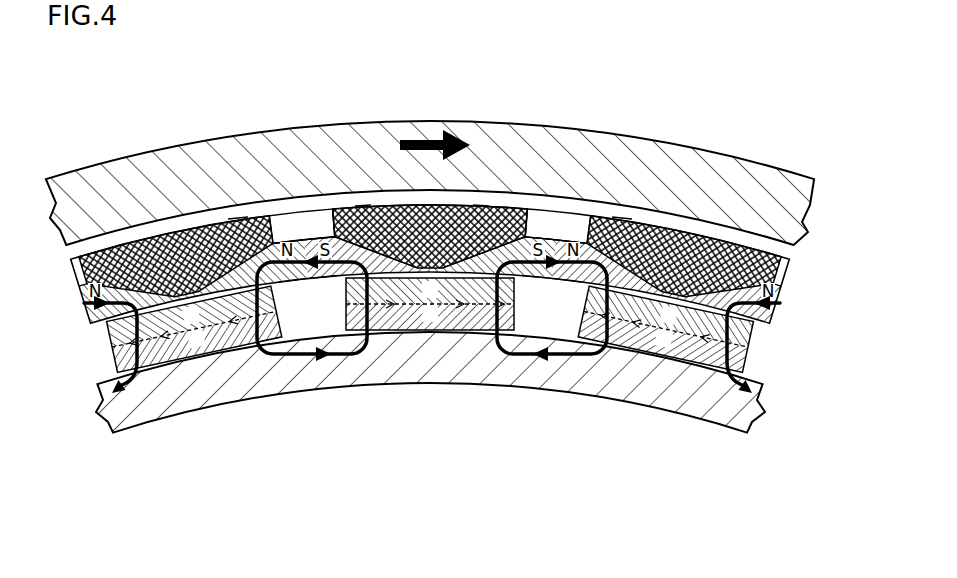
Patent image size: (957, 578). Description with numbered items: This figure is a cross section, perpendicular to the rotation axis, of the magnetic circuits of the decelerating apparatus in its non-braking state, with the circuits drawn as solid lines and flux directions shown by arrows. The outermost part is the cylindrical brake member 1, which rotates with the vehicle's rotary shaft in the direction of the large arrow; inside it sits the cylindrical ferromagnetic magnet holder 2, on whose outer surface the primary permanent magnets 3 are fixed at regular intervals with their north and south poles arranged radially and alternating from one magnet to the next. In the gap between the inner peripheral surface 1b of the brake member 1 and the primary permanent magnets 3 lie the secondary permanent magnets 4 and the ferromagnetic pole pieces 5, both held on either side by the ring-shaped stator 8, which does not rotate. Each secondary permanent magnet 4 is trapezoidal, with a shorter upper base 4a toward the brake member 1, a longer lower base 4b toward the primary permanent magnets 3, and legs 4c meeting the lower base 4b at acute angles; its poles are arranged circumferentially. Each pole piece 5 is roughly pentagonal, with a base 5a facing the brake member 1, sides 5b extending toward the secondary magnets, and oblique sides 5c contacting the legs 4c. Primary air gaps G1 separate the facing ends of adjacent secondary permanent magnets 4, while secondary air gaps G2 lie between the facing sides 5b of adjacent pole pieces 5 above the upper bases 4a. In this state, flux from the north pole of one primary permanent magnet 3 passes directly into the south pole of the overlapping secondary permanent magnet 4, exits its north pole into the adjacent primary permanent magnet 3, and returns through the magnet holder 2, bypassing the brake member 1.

The brake member 1 is at (770, 175).
The inner peripheral surface of the brake member 1b is at (797, 250).
The magnet holder 2 is at (705, 410).
The primary permanent magnets 3 is at (254, 336).
The secondary permanent magnets 4 is at (292, 240).
The upper base 4a is at (296, 233).
The lower base 4b is at (300, 279).
The legs 4c is at (238, 219).
The pole pieces 5 is at (196, 220).
The base 5a is at (467, 204).
The sides 5b is at (332, 222).
The oblique sides 5c is at (424, 271).
The stator 8 is at (793, 264).
The primary air gaps G1 is at (204, 327).
The secondary air gaps G2 is at (312, 222).